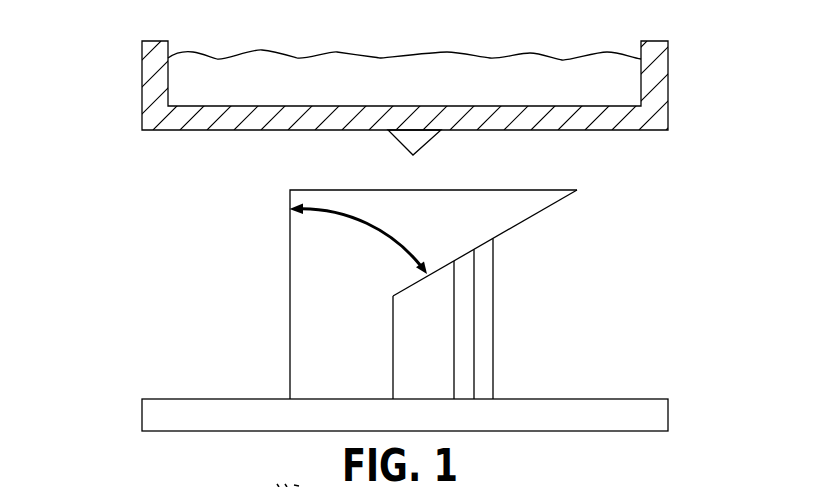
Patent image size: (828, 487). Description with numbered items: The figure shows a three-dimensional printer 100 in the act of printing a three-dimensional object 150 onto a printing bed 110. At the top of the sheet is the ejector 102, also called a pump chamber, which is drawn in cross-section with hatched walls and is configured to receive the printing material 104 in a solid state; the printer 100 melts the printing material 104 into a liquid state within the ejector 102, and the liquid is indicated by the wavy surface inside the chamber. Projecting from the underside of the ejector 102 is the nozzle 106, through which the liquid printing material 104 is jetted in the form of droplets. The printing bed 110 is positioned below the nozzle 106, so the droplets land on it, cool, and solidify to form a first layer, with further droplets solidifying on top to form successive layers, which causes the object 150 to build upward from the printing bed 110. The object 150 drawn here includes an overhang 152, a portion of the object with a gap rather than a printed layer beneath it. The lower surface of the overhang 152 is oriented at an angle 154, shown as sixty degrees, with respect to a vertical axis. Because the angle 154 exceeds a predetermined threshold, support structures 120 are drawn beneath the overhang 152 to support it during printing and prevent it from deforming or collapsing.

The 3D printer 100 is at (112, 46).
The ejector 102 is at (141, 90).
The 3D printing material 104 is at (428, 89).
The nozzle 106 is at (427, 142).
The printing bed 110 is at (155, 399).
The support structures 120 is at (493, 320).
The 3D object 150 is at (256, 264).
The overhang 152 is at (555, 226).
The angle 154 is at (383, 222).